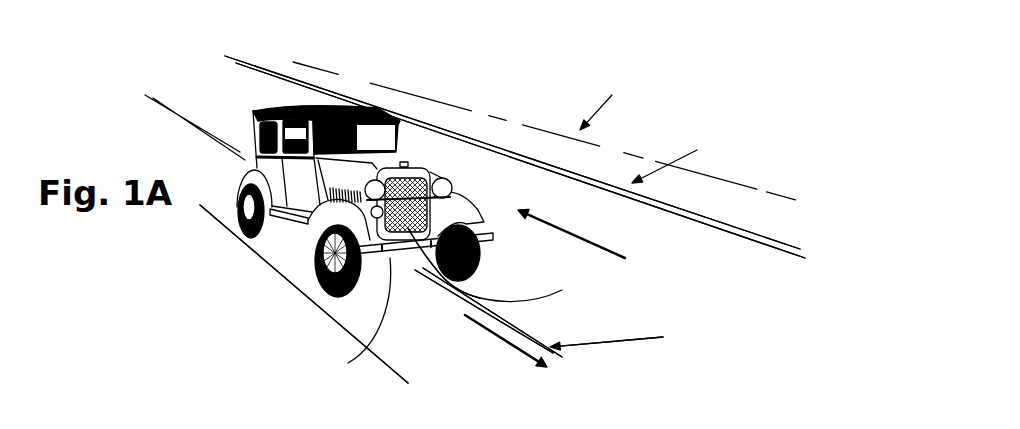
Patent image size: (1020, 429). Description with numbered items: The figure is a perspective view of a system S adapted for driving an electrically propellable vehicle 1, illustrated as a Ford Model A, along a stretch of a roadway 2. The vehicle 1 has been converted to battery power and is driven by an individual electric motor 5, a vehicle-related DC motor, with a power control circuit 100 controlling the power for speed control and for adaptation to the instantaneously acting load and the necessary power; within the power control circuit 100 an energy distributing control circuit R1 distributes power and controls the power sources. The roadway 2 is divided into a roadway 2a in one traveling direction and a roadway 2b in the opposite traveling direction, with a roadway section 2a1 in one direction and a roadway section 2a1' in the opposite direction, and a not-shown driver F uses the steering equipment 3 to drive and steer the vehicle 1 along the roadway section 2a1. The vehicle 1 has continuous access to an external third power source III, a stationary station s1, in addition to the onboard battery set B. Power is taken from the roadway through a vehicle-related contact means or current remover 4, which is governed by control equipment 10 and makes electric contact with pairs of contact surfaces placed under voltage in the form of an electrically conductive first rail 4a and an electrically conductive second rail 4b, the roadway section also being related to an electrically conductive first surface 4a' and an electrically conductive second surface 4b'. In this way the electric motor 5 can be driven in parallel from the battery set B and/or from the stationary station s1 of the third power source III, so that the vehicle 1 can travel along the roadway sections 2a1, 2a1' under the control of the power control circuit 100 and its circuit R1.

The vehicle 1 is at (252, 133).
The stretch of a roadway 2 is at (397, 314).
The roadway in one traveling direction 2a is at (557, 395).
The roadway section in one traveling direction 2a1 is at (505, 346).
The roadway section in an opposite direction 2a1' is at (693, 152).
The roadway in an opposite traveling direction 2b is at (290, 85).
The steering equipment 3 is at (408, 139).
The current remover 4 is at (354, 328).
The electrical conductive first rail 4a is at (548, 188).
The electrical conductive second rail 4b is at (546, 152).
The electrical conductive first surface 4a' is at (483, 314).
The electrical conductive second surface 4b' is at (500, 312).
The electric motor 5 is at (417, 167).
The control equipment 10 is at (277, 230).
The power control circuit 100 is at (480, 298).
The energy distributing control circuit R1 is at (485, 265).
The driver F is at (367, 137).
The system S is at (614, 103).
The battery set B is at (303, 250).
The stationary station s1 is at (663, 334).
The third power source III is at (611, 341).